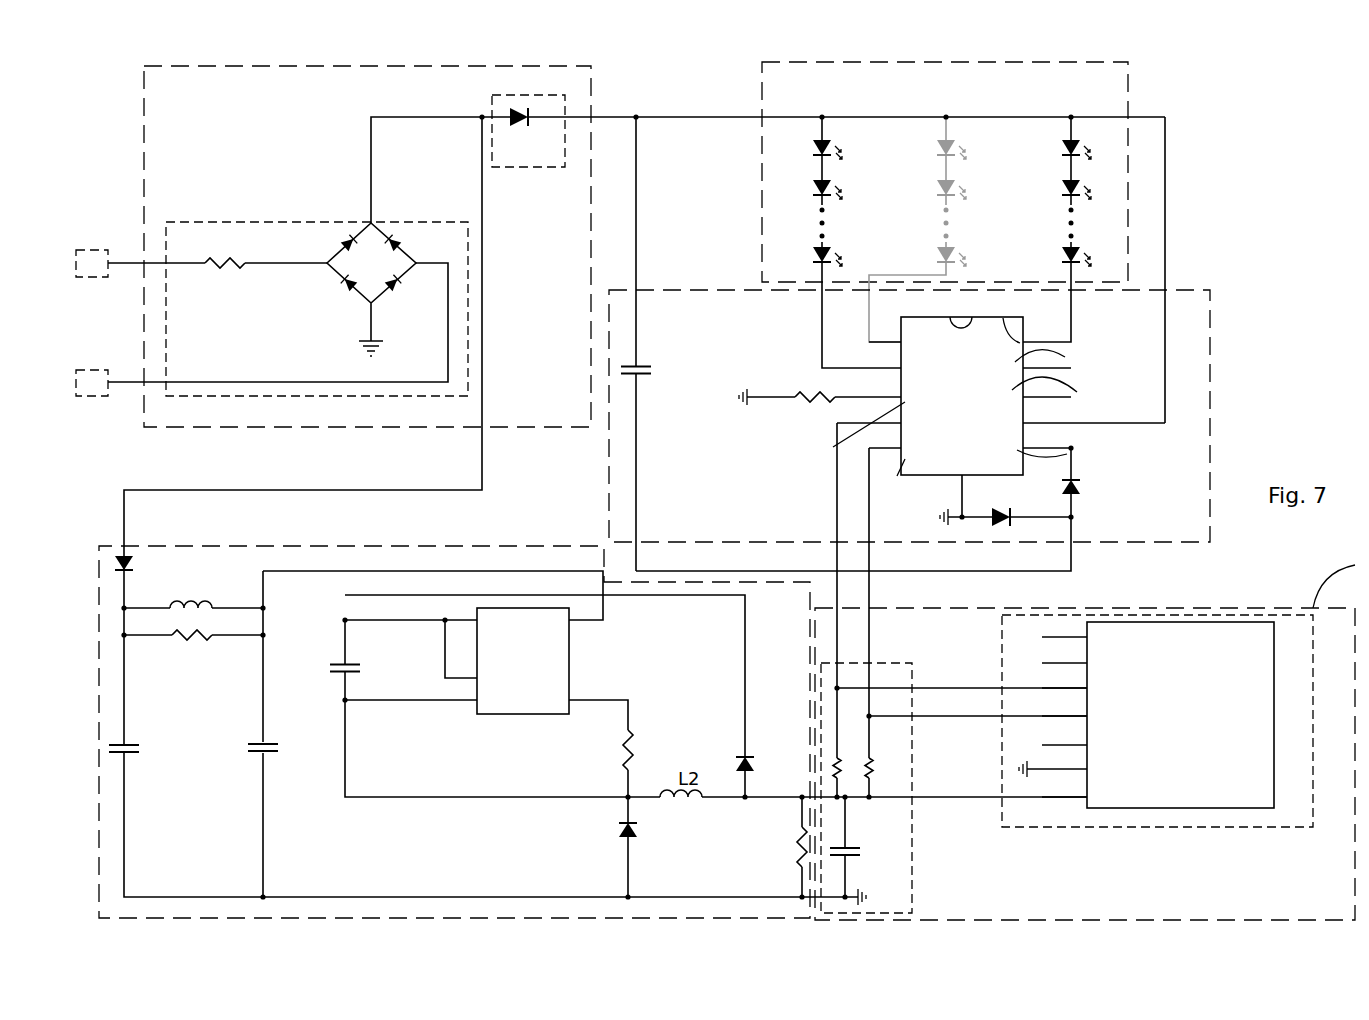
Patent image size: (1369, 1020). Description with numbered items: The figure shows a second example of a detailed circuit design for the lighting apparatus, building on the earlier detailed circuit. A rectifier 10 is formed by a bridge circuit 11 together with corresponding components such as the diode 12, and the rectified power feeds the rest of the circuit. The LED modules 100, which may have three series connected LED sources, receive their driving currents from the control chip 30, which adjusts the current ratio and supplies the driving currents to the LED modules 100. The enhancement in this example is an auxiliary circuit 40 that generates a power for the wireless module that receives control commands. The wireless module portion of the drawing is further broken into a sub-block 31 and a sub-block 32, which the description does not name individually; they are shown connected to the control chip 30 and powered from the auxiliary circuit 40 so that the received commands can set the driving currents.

The rectifier 10 is at (366, 66).
The bridge circuit 11 is at (228, 222).
The diode 12 is at (498, 168).
The LED modules 100 is at (898, 62).
The control chip 30 is at (1192, 290).
The pull-up resistor unit 31 is at (886, 663).
The control unit 32 is at (1157, 828).
The auxiliary circuit 40 is at (466, 546).